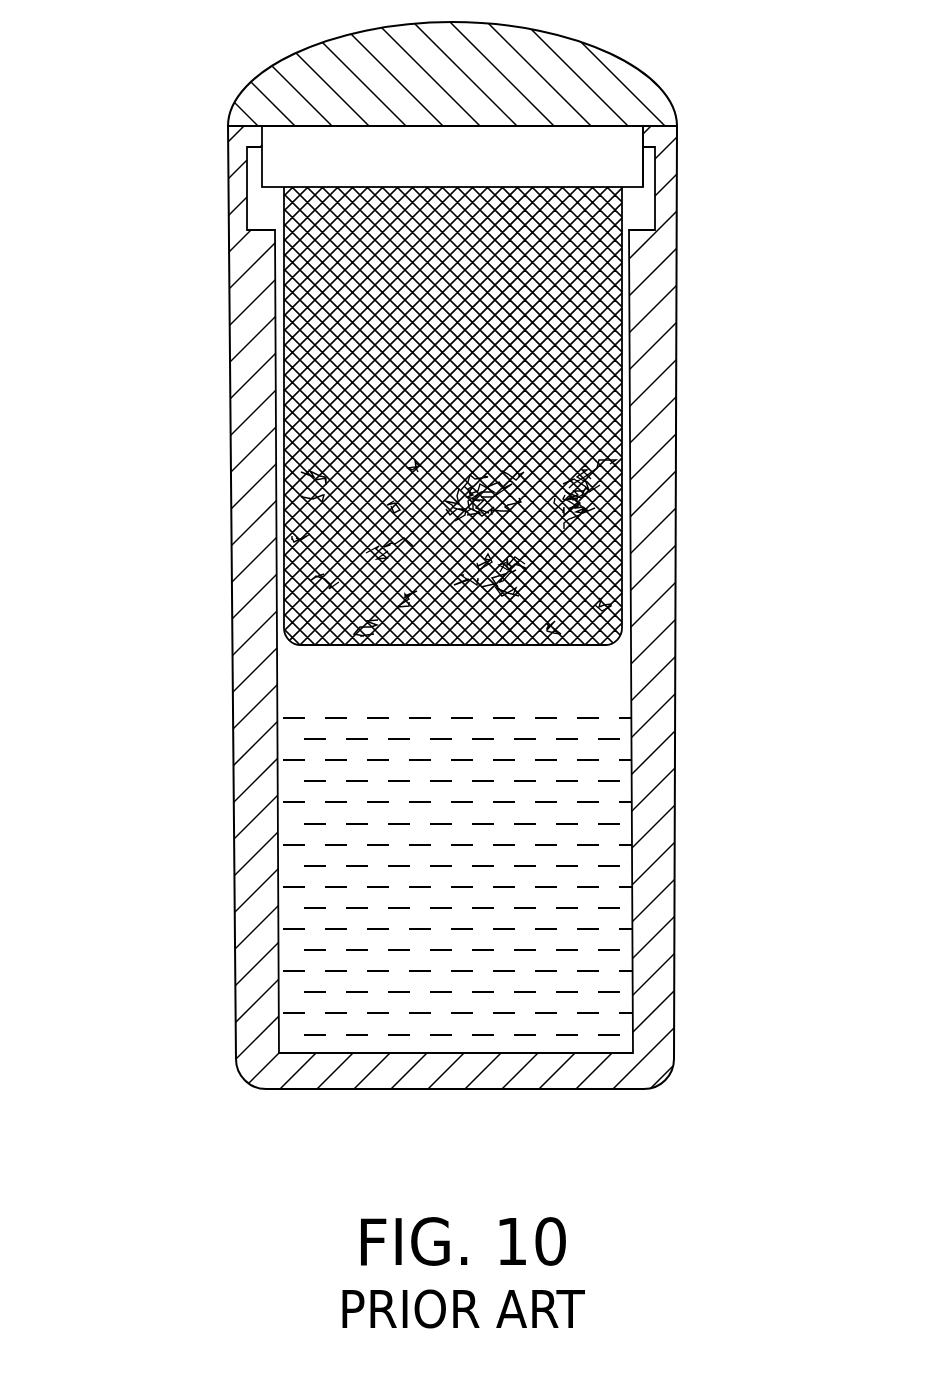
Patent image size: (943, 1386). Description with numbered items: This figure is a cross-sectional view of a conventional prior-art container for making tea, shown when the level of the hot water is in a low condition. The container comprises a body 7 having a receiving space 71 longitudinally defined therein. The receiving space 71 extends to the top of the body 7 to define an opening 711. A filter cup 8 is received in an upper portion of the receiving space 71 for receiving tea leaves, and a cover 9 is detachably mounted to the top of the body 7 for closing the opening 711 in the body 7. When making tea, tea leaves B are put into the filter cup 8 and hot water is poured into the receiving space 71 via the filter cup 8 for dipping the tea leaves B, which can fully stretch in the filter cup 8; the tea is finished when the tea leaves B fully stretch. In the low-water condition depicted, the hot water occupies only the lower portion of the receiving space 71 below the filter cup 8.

The body 7 is at (206, 550).
The receiving space 71 is at (303, 682).
The opening 711 is at (643, 178).
The filter cup 8 is at (285, 148).
The cover 9 is at (602, 72).
The tea leaves B is at (617, 463).